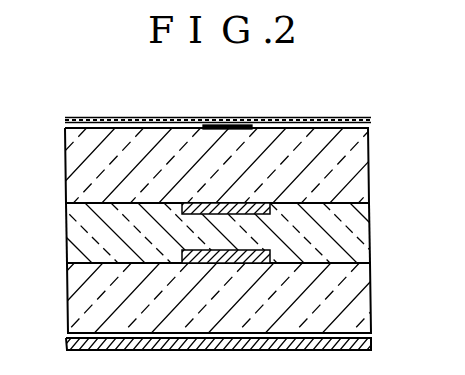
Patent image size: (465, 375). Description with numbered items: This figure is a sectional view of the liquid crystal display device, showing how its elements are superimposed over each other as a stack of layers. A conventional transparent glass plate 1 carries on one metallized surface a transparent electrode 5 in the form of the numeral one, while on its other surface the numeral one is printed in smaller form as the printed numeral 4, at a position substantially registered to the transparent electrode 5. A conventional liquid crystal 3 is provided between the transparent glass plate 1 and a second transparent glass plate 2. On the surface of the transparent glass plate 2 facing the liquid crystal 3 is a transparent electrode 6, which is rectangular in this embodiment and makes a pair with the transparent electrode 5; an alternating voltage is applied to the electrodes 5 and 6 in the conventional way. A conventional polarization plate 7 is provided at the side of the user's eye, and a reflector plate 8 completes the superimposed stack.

The transparent glass plate 1 is at (364, 162).
The transparent glass plate 2 is at (365, 300).
The liquid crystal 3 is at (70, 238).
The printed numeral 4 is at (242, 118).
The transparent electrode 5 is at (270, 209).
The transparent electrode 6 is at (270, 256).
The polarization plate 7 is at (368, 118).
The reflector plate 8 is at (369, 344).